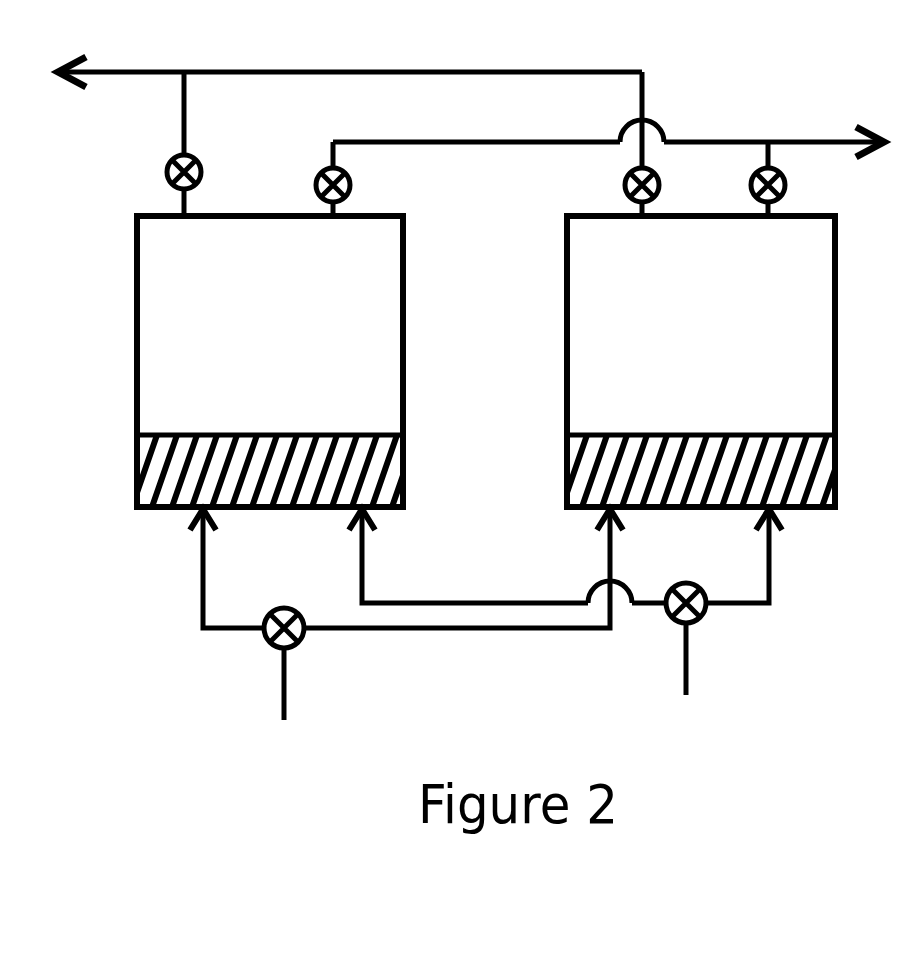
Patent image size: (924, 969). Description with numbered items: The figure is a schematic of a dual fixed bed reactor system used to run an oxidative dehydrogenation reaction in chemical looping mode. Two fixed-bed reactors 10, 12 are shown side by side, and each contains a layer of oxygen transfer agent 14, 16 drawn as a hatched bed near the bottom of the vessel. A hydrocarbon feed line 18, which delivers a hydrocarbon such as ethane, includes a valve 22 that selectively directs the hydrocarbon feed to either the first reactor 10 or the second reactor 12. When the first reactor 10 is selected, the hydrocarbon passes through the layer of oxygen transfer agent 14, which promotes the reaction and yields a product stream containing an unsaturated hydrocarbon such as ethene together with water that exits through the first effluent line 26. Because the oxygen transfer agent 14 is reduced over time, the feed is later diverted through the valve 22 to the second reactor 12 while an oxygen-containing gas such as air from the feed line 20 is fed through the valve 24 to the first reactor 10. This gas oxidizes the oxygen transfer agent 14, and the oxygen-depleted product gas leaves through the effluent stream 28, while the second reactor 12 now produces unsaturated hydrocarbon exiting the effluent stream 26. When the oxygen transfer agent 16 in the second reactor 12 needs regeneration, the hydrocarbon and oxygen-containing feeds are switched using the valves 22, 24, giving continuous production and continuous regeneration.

The first fixed-bed reactor 10 is at (132, 273).
The second fixed-bed reactor 12 is at (838, 250).
The layer of oxygen transfer agent 14 is at (207, 433).
The layer of oxygen transfer agent 16 is at (722, 433).
The hydrocarbon feed line 18 is at (282, 695).
The oxygen-containing gas feed line 20 is at (690, 677).
The valve 22 is at (270, 614).
The valve 24 is at (703, 591).
The first effluent line 26 is at (140, 68).
The effluent stream 28 is at (802, 138).